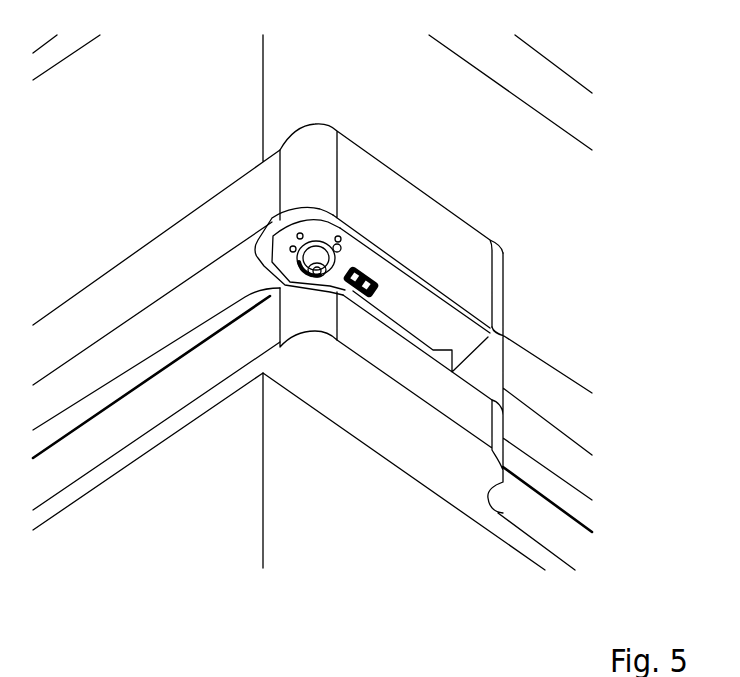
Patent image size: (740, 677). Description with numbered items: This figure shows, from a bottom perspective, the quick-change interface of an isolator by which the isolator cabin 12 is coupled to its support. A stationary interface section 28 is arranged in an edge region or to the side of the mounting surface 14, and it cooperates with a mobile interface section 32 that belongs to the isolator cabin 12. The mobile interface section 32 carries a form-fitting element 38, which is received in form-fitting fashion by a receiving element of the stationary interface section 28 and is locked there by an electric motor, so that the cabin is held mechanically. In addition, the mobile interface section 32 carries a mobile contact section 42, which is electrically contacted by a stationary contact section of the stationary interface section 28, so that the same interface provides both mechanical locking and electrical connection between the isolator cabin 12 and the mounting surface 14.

The isolator cabin 12 is at (151, 165).
The mounting surface 14 is at (144, 493).
The stationary interface section 28 is at (408, 505).
The mobile interface section 32 is at (490, 193).
The form-fitting element 38 is at (323, 244).
The mobile contact section 42 is at (367, 255).